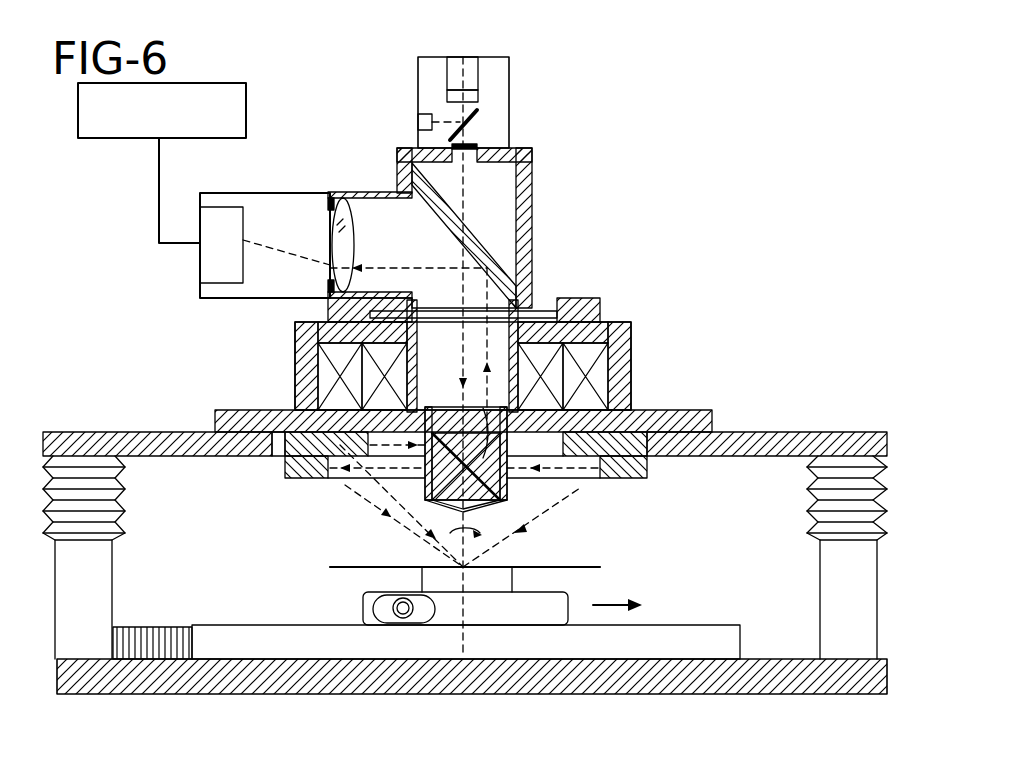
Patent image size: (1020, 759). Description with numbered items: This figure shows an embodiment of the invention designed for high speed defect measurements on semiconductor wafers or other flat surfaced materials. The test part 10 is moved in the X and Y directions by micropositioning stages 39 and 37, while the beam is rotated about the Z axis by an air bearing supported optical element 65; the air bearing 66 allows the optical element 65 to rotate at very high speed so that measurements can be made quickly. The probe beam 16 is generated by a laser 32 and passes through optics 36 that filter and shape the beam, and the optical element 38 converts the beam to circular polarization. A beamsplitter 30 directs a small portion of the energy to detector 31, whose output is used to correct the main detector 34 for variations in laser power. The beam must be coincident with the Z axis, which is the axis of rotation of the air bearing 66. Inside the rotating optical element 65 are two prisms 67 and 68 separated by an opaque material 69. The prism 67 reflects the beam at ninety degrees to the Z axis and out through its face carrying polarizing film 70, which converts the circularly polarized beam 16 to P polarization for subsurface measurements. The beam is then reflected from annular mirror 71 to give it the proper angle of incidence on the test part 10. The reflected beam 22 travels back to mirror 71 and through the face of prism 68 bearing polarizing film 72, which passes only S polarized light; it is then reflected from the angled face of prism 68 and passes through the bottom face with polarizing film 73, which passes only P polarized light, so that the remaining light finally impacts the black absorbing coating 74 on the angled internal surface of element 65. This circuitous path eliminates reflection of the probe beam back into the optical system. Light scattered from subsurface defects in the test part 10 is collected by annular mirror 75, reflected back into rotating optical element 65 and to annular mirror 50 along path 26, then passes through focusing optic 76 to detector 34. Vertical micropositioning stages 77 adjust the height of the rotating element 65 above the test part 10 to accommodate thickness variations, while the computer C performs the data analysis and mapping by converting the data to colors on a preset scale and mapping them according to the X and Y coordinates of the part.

The computer C is at (78, 104).
The detector 34 is at (205, 273).
The laser 32 is at (478, 75).
The spatial filter/beam expander 36 is at (478, 96).
The detector 31 is at (425, 113).
The beamsplitter 30 is at (475, 118).
The polarizer 38 is at (452, 146).
The annular mirror 50 is at (520, 249).
The probe beam 16 is at (462, 279).
The focusing optic 76 is at (337, 192).
The path 26 is at (378, 270).
The air bearing 66 is at (560, 310).
The prism 67 is at (445, 430).
The annular mirror 75 is at (298, 410).
The annular mirror 71 is at (285, 478).
The polarizing film 70 is at (457, 443).
The polarizing film 73 is at (472, 500).
The polarizing film 72 is at (485, 440).
The black absorbing coating 74 is at (452, 520).
The opaque material 69 is at (425, 482).
The prism 68 is at (502, 505).
The optical element 65 is at (515, 496).
The reflected beam 22 is at (545, 510).
The test part 10 is at (345, 566).
The micropositioning stage 39 is at (570, 600).
The Y axis Y is at (612, 605).
The Z axis Z is at (470, 605).
The micropositioning stage 37 is at (727, 627).
The vertical micropositioning stages 77 is at (105, 565).